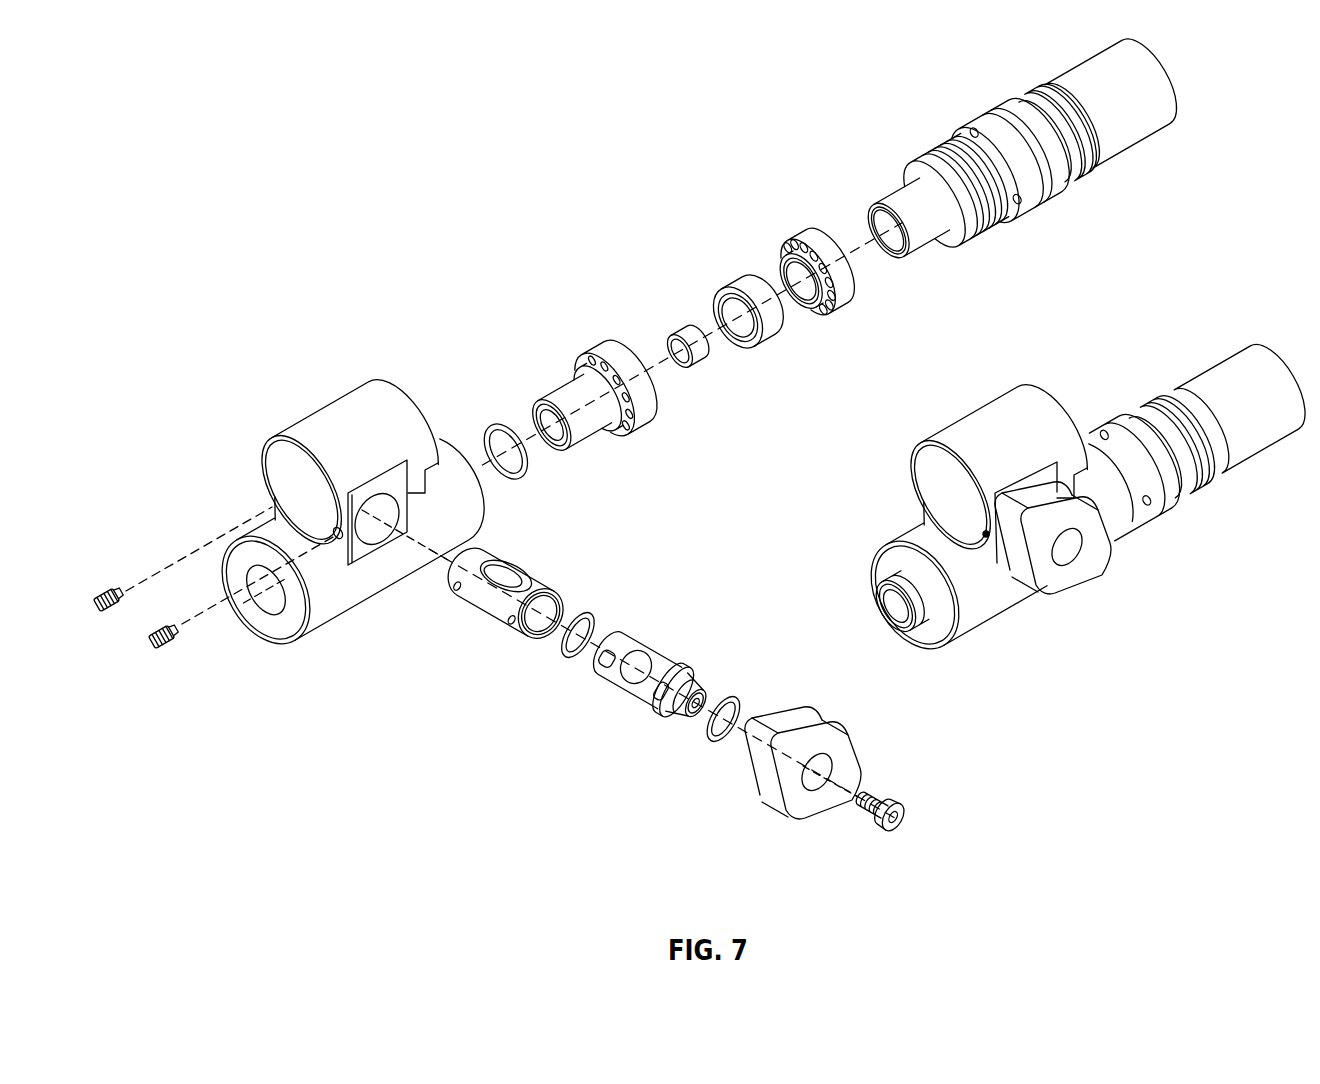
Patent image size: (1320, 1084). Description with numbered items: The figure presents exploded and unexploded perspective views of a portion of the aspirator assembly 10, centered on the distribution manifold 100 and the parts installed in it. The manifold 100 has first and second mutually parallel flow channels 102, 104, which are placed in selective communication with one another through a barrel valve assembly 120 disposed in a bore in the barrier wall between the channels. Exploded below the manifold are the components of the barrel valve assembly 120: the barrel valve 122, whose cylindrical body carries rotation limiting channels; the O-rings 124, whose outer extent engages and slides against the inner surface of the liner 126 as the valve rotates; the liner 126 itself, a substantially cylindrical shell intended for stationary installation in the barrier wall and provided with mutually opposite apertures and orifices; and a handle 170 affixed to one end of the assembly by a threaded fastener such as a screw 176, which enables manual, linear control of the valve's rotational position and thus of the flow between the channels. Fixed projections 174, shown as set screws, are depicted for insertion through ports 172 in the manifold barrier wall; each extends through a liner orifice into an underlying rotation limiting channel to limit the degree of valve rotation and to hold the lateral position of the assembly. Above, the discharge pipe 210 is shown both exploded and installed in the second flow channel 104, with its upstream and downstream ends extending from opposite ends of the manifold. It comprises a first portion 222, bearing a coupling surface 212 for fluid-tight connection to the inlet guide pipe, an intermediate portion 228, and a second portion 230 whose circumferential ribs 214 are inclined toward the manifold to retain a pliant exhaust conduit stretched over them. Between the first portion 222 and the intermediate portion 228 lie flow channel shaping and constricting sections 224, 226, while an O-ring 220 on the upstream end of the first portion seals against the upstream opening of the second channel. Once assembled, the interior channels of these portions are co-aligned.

The solenoid valve assembly 10 is at (1197, 290).
The distribution manifold 100 is at (315, 331).
The first flow channel 102 is at (283, 434).
The second flow channel 104 is at (318, 628).
The barrel valve assembly 120 is at (495, 781).
The barrel valve 122 is at (631, 693).
The O-rings 124 is at (567, 658).
The liner 126 is at (480, 618).
The handle 170 is at (769, 798).
The ports 172 is at (232, 583).
The fixed projections 174 is at (119, 589).
The screw 176 is at (880, 832).
The discharge pipe 210 is at (704, 231).
The coupling surface 212 is at (550, 405).
The circumferential ribs 214 is at (1017, 104).
The O-ring 220 is at (520, 481).
The first portion 222 is at (645, 411).
The flow channel shaping and constricting section 224 is at (697, 364).
The flow channel shaping and constricting section 226 is at (767, 334).
The intermediate portion 228 is at (852, 294).
The second portion 230 is at (902, 263).